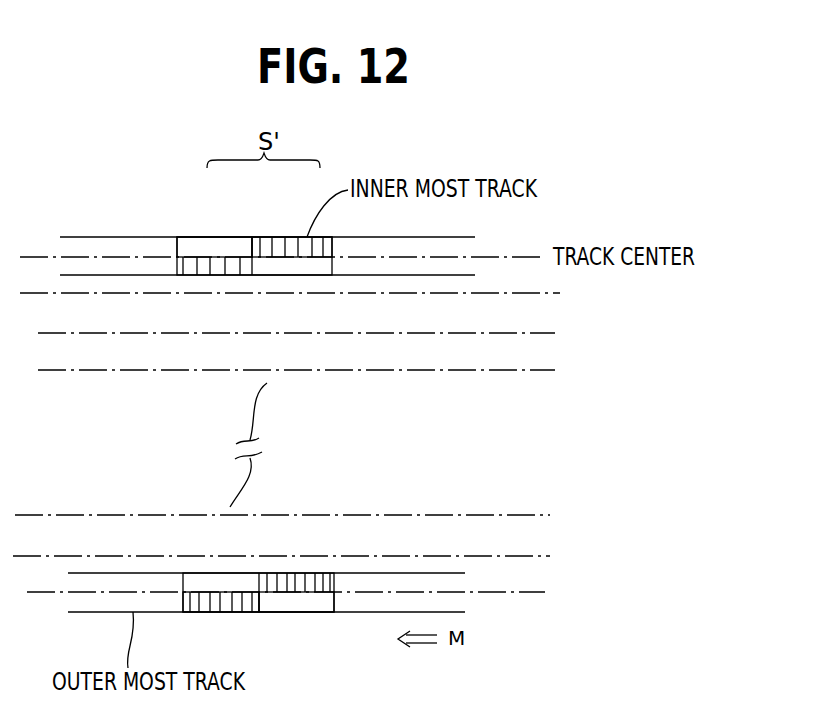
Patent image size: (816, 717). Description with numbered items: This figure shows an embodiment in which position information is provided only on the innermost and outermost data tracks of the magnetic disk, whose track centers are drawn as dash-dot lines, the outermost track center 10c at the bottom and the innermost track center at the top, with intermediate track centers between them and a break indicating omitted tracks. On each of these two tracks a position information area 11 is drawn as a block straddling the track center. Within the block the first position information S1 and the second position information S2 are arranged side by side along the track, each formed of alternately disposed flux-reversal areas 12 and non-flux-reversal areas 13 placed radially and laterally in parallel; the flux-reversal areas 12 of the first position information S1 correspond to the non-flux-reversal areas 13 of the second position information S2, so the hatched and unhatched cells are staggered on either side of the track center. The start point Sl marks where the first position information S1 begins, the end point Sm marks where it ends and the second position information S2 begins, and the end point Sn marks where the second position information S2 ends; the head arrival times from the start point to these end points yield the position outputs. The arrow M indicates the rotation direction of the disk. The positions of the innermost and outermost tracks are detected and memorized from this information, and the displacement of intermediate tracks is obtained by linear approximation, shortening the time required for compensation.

The position information area 11 is at (177, 216).
The flux-reversal area 12 is at (199, 250).
The non-flux-reversal area 13 is at (283, 247).
The outermost track center 10c is at (545, 592).
The first position information S1 is at (218, 218).
The second position information S2 is at (305, 214).
The end point of the first position information Sm is at (252, 237).
The end point of the second position information Sn is at (333, 237).
The start point of the first position information Sl is at (177, 237).